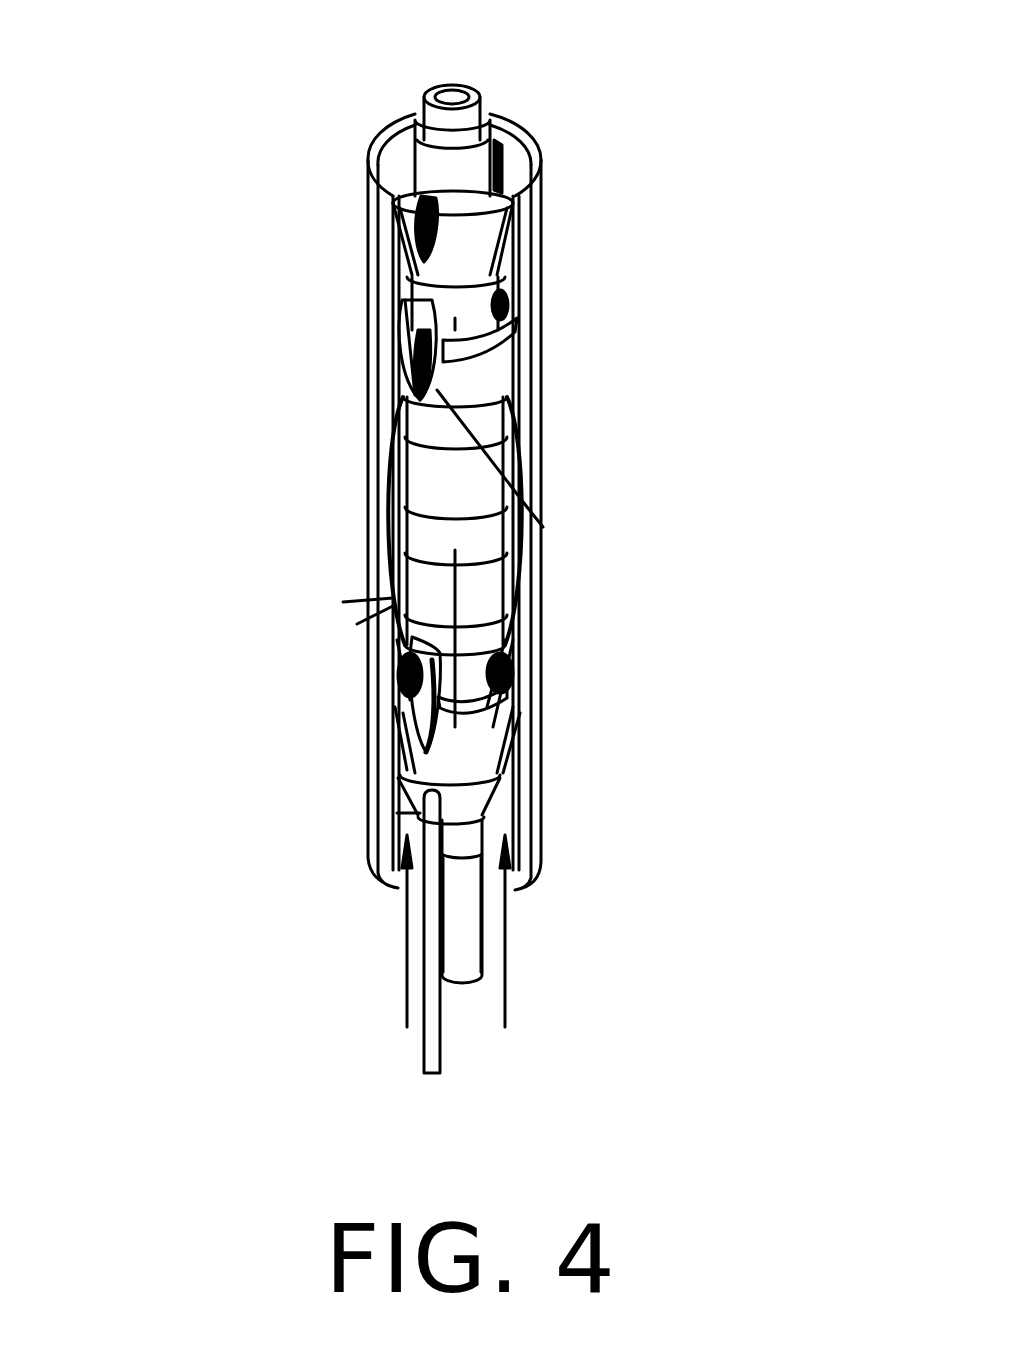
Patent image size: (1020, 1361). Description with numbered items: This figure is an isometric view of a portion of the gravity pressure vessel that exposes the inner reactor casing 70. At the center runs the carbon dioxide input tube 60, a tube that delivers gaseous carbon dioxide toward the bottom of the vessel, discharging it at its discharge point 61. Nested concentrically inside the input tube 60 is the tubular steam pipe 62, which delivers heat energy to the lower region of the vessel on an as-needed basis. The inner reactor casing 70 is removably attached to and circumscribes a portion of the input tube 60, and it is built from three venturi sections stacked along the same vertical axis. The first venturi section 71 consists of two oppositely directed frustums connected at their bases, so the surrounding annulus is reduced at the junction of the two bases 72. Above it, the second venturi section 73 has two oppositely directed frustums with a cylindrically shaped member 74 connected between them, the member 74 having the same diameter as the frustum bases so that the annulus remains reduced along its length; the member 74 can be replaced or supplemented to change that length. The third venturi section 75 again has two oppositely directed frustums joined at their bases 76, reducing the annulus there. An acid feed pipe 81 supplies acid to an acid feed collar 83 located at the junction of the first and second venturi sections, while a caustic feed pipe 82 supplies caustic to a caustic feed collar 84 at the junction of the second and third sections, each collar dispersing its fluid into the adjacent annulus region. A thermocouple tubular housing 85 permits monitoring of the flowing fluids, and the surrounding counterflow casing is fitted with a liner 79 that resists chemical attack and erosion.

The carbon dioxide input tube 60 is at (362, 167).
The discharge point 61 is at (510, 830).
The steam pipe 62 is at (470, 87).
The inner reactor casing 70 is at (395, 605).
The first venturi section 71 is at (400, 725).
The junction of the two bases 72 is at (397, 773).
The second venturi section 73 is at (395, 398).
The cylindrically shaped member 74 is at (395, 545).
The third venturi section 75 is at (507, 225).
The bases 76 is at (500, 292).
The liner 79 is at (543, 747).
The acid feed pipe 81 is at (370, 250).
The caustic feed pipe 82 is at (525, 130).
The acid feed collar 83 is at (500, 688).
The caustic feed collar 84 is at (500, 355).
The thermocouple tubular housing 85 is at (543, 527).